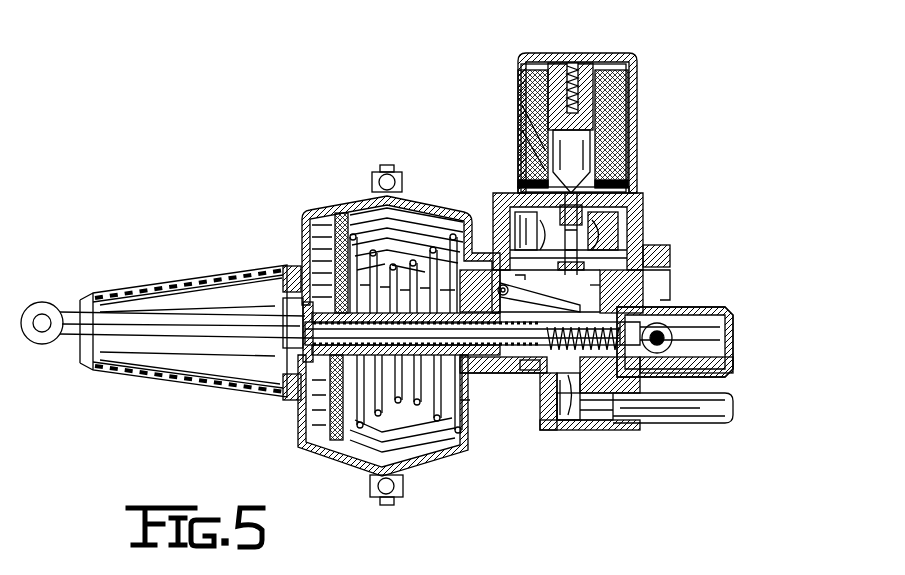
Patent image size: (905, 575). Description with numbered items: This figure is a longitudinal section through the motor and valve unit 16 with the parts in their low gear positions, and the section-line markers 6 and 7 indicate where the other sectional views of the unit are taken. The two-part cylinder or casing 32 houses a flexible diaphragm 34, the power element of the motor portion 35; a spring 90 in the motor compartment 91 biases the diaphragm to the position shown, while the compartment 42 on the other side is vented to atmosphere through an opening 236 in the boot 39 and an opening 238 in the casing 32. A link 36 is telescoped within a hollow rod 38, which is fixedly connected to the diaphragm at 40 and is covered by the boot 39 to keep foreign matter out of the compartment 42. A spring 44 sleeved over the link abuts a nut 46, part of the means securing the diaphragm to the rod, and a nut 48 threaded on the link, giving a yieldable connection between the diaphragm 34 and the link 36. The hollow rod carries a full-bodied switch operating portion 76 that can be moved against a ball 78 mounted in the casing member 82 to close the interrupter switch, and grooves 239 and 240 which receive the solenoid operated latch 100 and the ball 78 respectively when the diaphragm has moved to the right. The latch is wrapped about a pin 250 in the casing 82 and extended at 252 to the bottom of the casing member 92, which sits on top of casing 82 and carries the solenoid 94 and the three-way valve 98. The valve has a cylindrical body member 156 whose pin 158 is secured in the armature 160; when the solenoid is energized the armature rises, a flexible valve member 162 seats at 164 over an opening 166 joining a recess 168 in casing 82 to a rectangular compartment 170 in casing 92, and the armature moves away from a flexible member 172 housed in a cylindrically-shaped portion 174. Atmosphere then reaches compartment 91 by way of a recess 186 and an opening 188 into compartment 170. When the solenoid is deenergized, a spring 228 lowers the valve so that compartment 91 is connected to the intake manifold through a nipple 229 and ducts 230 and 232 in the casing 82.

The motor and valve unit 16 is at (638, 105).
The two-part cylinder or casing 32 is at (340, 204).
The flexible diaphragm 34 is at (343, 455).
The motor portion 35 is at (440, 464).
The link 36 is at (183, 338).
The hollow rod 38 is at (523, 363).
The boot 39 is at (207, 382).
The diaphragm connection 40 is at (296, 400).
The compartment 42 is at (313, 221).
The spring 44 is at (527, 371).
The nut 46 is at (297, 296).
The nut 48 is at (608, 364).
The full-bodied switch operating portion 76 is at (560, 404).
The ball 78 is at (662, 335).
The one-piece casing member 82 is at (676, 313).
The spring 90 is at (414, 262).
The motor compartment 91 is at (413, 210).
The one-piece casing member 92 is at (602, 217).
The solenoid 94 is at (628, 75).
The three-way valve 98 is at (616, 196).
The solenoid operated latch 100 is at (598, 285).
The cylindrical body member 156 is at (531, 183).
The pin 158 is at (580, 170).
The armature 160 is at (563, 92).
The flexible valve member 162 is at (646, 266).
The valve seat 164 is at (620, 234).
The opening 166 is at (633, 198).
The recess 168 is at (647, 273).
The rectangular-shaped compartment 170 is at (571, 182).
The flexible member 172 is at (523, 126).
The cylindrically-shaped portion 174 is at (526, 150).
The recess 186 is at (540, 200).
The opening 188 is at (520, 105).
The spring 228 is at (572, 68).
The nipple 229 is at (703, 421).
The duct 230 is at (593, 414).
The duct 232 is at (540, 398).
The opening 236 is at (210, 282).
The opening 238 is at (283, 351).
The groove 239 is at (441, 416).
The groove 240 is at (550, 408).
The pin 250 is at (574, 297).
The latch extension 252 is at (519, 278).
The section line 6 is at (366, 326).
The section line 7 is at (489, 240).